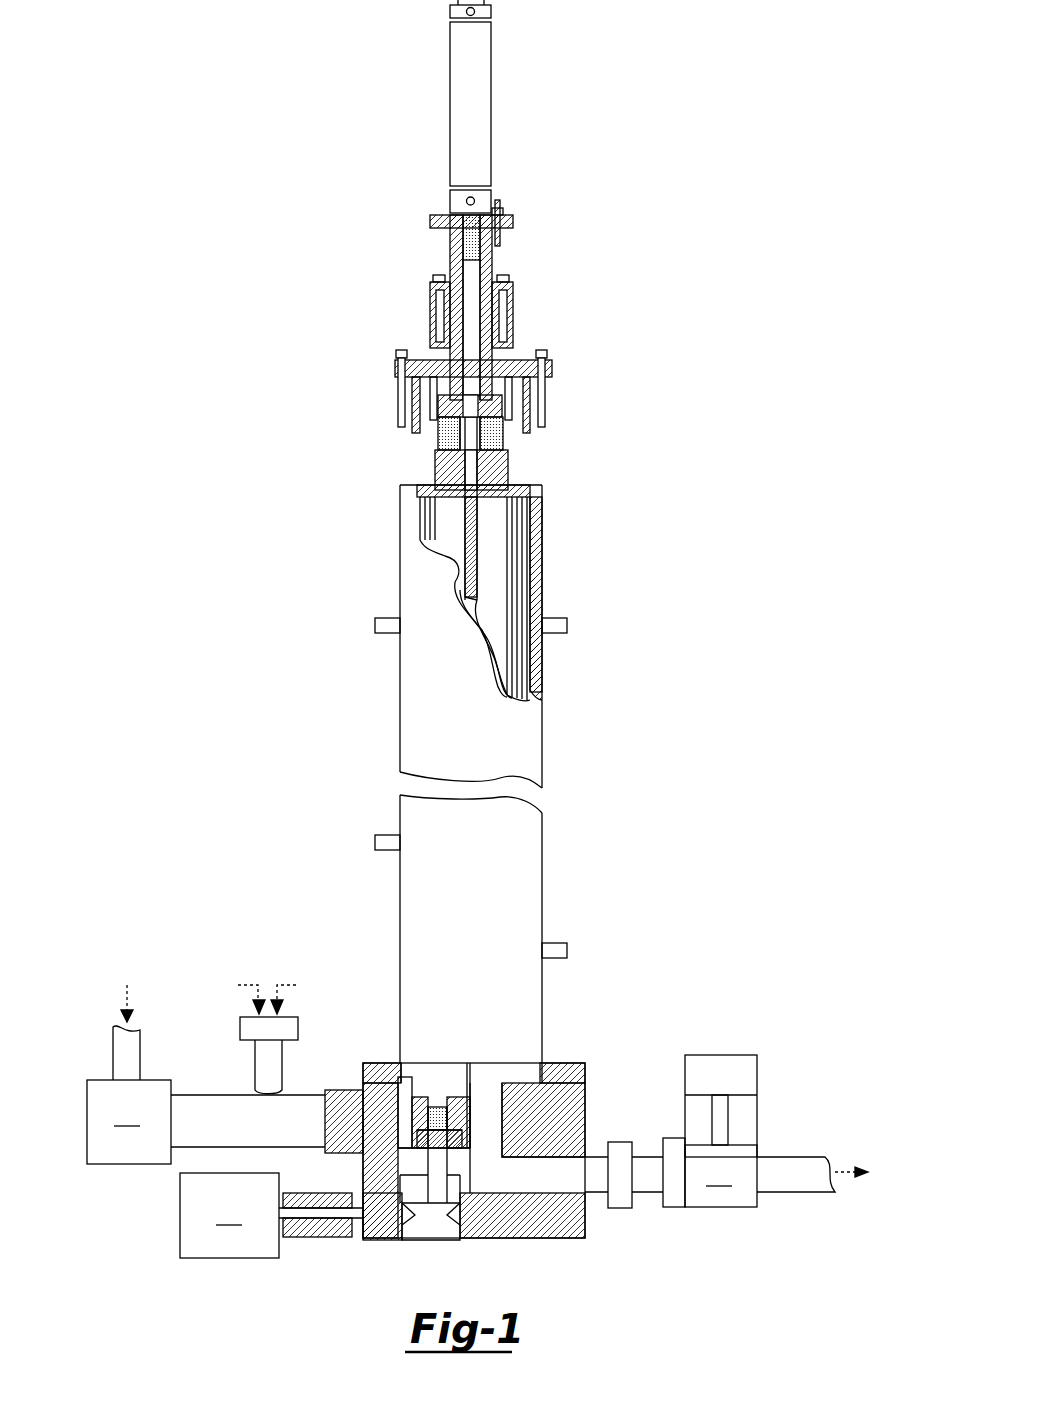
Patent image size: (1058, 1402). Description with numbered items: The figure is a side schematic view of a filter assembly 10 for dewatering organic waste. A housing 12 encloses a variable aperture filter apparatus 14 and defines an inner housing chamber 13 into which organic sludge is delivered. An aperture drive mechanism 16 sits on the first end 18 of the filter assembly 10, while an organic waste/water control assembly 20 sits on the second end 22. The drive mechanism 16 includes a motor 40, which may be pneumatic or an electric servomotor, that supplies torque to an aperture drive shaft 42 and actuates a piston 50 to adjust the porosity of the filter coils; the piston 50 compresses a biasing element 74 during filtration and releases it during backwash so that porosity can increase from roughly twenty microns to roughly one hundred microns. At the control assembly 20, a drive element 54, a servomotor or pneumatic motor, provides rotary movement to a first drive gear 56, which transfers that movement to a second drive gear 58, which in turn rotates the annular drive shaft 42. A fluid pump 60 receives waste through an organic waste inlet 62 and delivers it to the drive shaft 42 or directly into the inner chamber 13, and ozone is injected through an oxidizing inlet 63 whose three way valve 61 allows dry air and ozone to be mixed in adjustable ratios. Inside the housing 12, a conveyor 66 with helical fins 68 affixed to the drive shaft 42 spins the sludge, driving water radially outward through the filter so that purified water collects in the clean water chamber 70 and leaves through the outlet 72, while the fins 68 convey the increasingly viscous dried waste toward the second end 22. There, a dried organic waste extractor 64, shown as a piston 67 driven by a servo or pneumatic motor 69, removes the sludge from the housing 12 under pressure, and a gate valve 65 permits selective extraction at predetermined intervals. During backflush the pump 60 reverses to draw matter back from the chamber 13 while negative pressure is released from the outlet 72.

The filter assembly 10 is at (390, 160).
The housing 12 is at (400, 566).
The inner housing chamber 13 is at (452, 510).
The variable aperture filter apparatus 14 is at (520, 652).
The aperture drive mechanism 16 is at (510, 188).
The first end 18 is at (420, 460).
The organic waste/water control assembly 20 is at (566, 1063).
The second end 22 is at (605, 1107).
The motor 40 is at (491, 95).
The aperture drive shaft 42 is at (440, 478).
The piston 50 is at (528, 480).
The drive element 54 is at (271, 1215).
The first drive gear 56 is at (325, 1218).
The second drive gear 58 is at (437, 1163).
The fluid pump 60 is at (206, 1122).
The three way valve 61 is at (298, 1026).
The organic waste inlet 62 is at (135, 1055).
The oxidizing inlet 63 is at (283, 1072).
The dried organic waste extractor 64 is at (765, 1131).
The gate valve 65 is at (622, 1208).
The conveyor 66 is at (490, 521).
The piston 67 is at (742, 1145).
The helical fins 68 is at (490, 565).
The servo or pneumatic motor 69 is at (748, 1075).
The clean water chamber 70 is at (540, 516).
The outlet 72 is at (386, 618).
The biasing element 74 is at (503, 445).